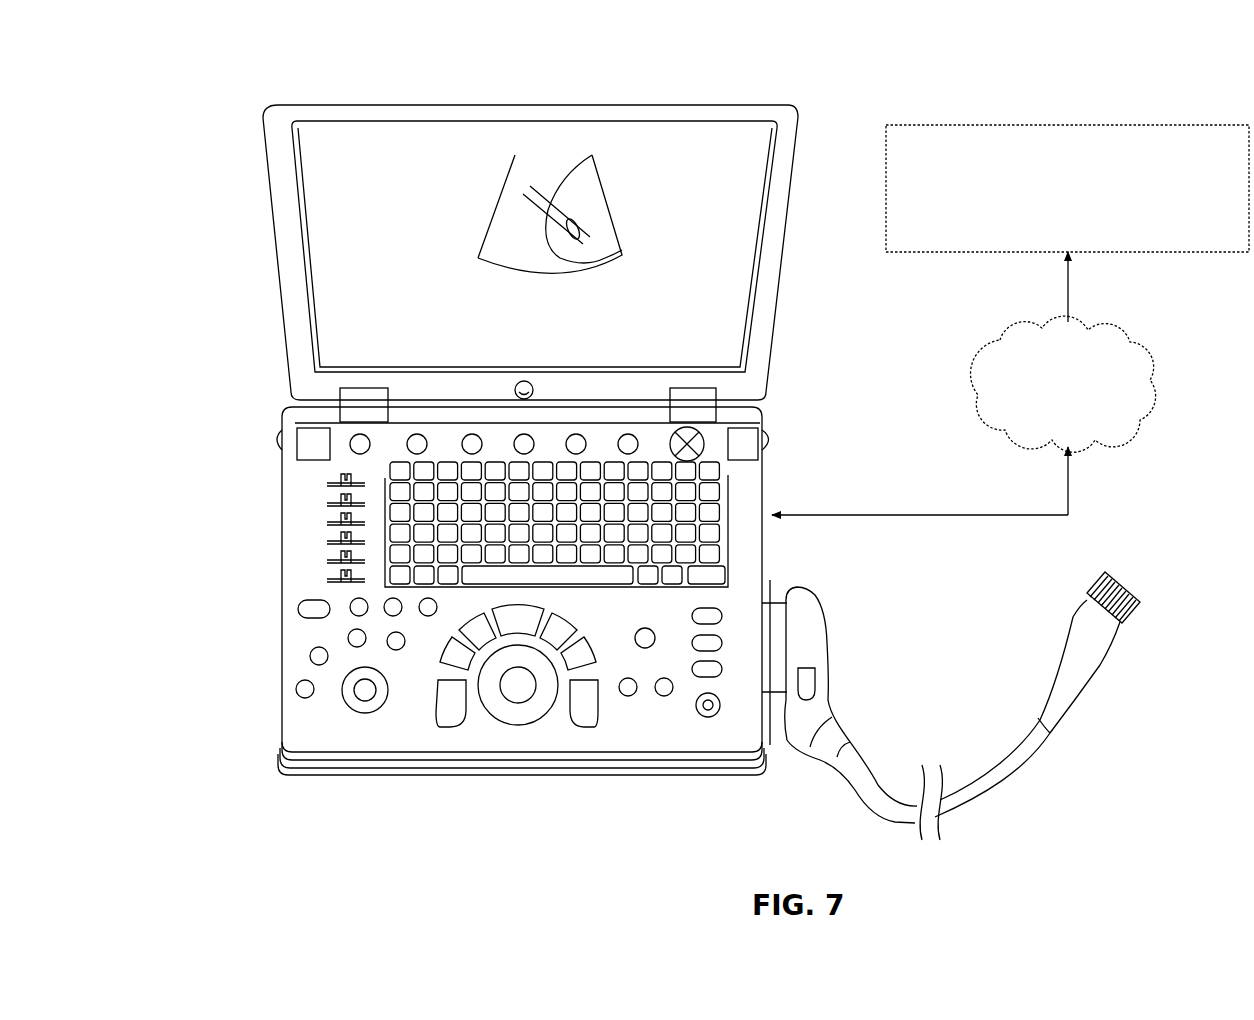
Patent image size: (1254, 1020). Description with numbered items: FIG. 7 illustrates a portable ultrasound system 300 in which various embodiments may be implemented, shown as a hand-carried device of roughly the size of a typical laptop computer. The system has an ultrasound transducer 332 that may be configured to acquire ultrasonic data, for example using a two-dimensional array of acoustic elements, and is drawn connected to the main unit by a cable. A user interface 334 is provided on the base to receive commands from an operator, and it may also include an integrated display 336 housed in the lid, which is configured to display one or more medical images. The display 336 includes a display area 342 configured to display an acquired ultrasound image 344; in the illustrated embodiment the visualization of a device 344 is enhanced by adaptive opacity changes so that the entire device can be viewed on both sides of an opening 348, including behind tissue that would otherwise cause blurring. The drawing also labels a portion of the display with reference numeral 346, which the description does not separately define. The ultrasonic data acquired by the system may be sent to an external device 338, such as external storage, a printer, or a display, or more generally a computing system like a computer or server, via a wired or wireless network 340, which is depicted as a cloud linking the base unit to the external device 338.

The portable ultrasound system 300 is at (186, 58).
The ultrasound transducer 332 is at (943, 823).
The user interface 334 is at (262, 445).
The integrated display 336 is at (262, 105).
The external device 338 is at (952, 124).
The network 340 is at (1038, 322).
The display area 342 is at (351, 140).
The acquired ultrasound image / device 344 is at (540, 187).
The display bezel region 346 is at (733, 272).
The opening 348 is at (575, 223).